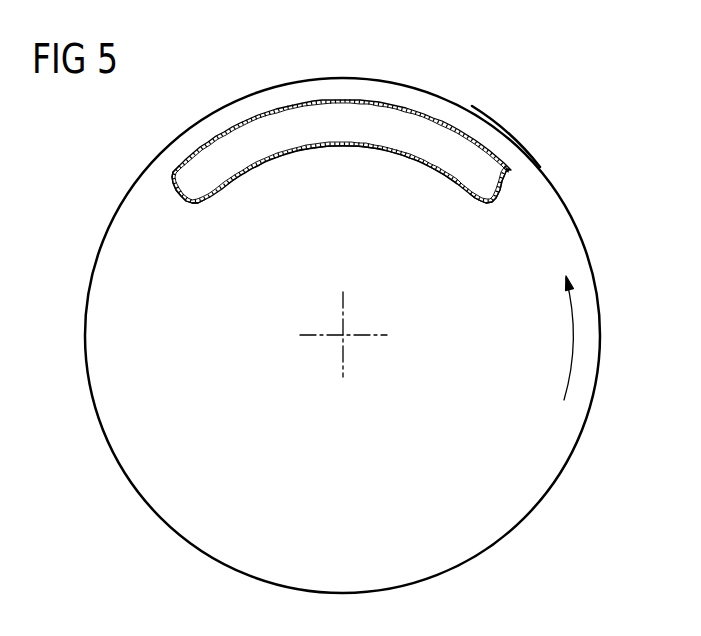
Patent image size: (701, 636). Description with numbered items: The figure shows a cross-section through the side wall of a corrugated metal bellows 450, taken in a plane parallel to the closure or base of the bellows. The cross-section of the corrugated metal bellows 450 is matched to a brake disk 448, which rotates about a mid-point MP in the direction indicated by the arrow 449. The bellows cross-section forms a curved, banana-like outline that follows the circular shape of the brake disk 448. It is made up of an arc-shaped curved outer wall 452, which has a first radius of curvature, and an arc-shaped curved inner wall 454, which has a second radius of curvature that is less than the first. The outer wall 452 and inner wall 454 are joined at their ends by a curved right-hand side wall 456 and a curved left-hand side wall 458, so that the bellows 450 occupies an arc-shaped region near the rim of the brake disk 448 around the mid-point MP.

The brake disk 448 is at (543, 499).
The arrow 449 is at (573, 363).
The corrugated metal bellows 450 is at (522, 129).
The arc-shaped curved outer wall 452 is at (405, 107).
The arc-shaped curved inner wall 454 is at (383, 150).
The curved right-hand side wall 456 is at (509, 190).
The curved left-hand side wall 458 is at (181, 194).
The mid-point MP is at (343, 336).